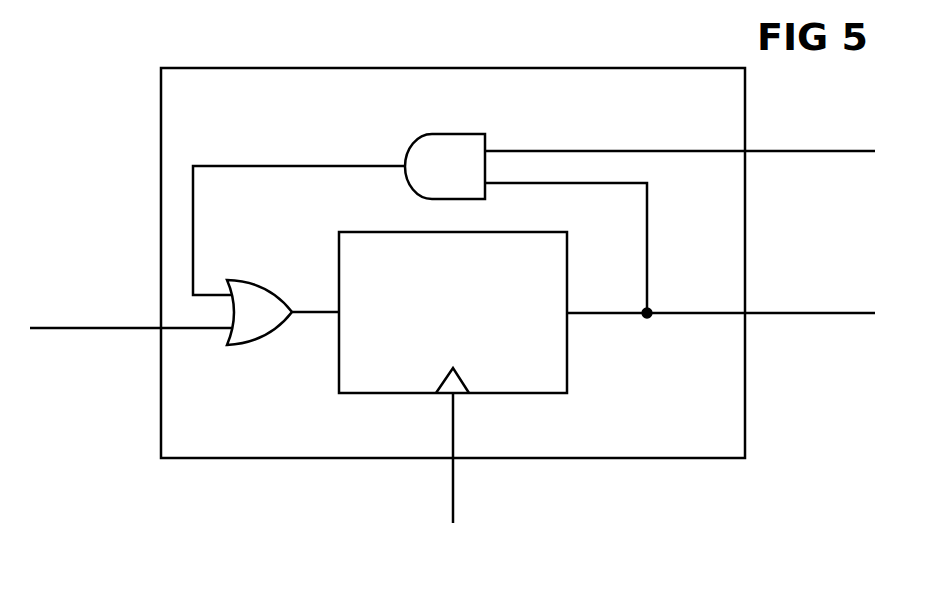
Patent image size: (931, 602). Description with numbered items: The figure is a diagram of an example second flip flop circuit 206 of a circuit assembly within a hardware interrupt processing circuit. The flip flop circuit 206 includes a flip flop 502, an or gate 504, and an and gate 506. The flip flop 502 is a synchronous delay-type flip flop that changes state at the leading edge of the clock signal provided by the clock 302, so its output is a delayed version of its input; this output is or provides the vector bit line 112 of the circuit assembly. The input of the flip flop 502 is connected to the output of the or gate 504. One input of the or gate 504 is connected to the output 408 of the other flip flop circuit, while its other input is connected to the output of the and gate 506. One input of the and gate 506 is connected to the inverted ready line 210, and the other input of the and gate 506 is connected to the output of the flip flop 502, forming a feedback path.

The flip flop circuit 206 is at (735, 100).
The and gate 506 is at (450, 134).
The inverted ready line 210 is at (789, 231).
The vector bit line 112 is at (789, 391).
The output 408 is at (138, 328).
The or gate 504 is at (229, 343).
The flip flop 502 is at (434, 288).
The clock 302 is at (434, 578).